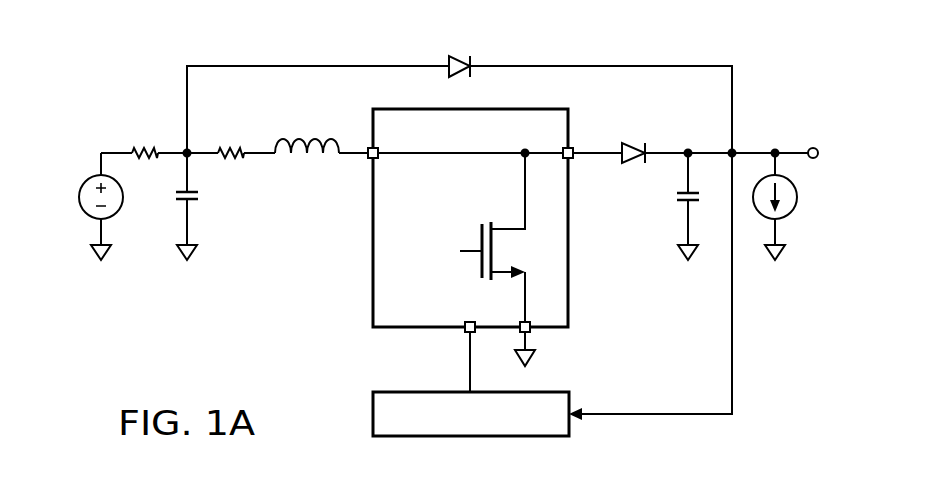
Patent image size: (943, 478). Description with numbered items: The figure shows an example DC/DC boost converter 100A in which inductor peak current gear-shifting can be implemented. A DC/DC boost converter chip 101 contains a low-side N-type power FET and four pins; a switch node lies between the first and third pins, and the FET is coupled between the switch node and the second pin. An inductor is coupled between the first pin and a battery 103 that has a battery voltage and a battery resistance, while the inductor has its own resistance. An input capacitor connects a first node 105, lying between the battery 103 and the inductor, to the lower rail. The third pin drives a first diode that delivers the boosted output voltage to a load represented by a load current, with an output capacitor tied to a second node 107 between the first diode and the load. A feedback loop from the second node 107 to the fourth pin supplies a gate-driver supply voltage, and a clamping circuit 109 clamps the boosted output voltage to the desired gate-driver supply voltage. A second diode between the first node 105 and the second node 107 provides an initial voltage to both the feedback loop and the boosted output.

The DC/DC boost converter 100A is at (106, 63).
The DC/DC boost converter chip 101 is at (362, 221).
The battery 103 is at (90, 177).
The first node 105 is at (192, 160).
The second node 107 is at (708, 150).
The clamping circuit 109 is at (569, 427).